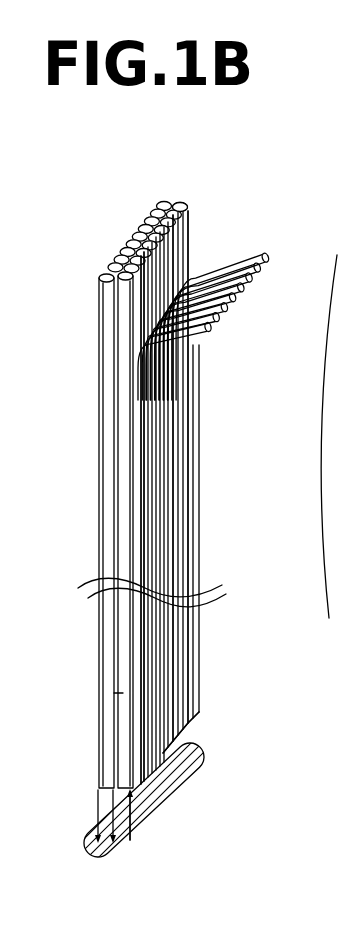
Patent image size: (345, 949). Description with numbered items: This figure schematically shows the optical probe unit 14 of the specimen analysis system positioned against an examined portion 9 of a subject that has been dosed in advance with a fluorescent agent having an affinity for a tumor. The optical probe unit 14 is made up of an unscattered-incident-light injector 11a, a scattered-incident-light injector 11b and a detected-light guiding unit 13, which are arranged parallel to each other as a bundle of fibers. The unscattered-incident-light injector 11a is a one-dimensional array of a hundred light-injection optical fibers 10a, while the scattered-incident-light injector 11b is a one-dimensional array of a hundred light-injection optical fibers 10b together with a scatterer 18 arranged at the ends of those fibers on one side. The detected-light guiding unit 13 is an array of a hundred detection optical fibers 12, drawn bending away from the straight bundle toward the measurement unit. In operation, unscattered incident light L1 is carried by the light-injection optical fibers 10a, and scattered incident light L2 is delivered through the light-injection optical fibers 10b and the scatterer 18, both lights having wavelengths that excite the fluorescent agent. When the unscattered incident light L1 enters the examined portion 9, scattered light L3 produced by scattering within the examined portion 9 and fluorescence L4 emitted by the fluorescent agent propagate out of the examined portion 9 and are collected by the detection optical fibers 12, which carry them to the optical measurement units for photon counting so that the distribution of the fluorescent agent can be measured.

The examined portion 9 is at (178, 800).
The light-injection optical fibers 10a is at (105, 276).
The light-injection optical fibers 10b is at (120, 262).
The unscattered-incident-light injector 11a is at (132, 220).
The scattered-incident-light injector 11b is at (190, 197).
The detection optical fibers 12 is at (267, 254).
The detected-light guiding unit 13 is at (230, 294).
The optical probe unit 14 is at (156, 181).
The scatterer 18 is at (117, 737).
The unscattered incident light L1 is at (98, 814).
The scattered incident light L2 is at (112, 810).
The scattered light L3 is at (132, 828).
The fluorescence L4 is at (132, 828).